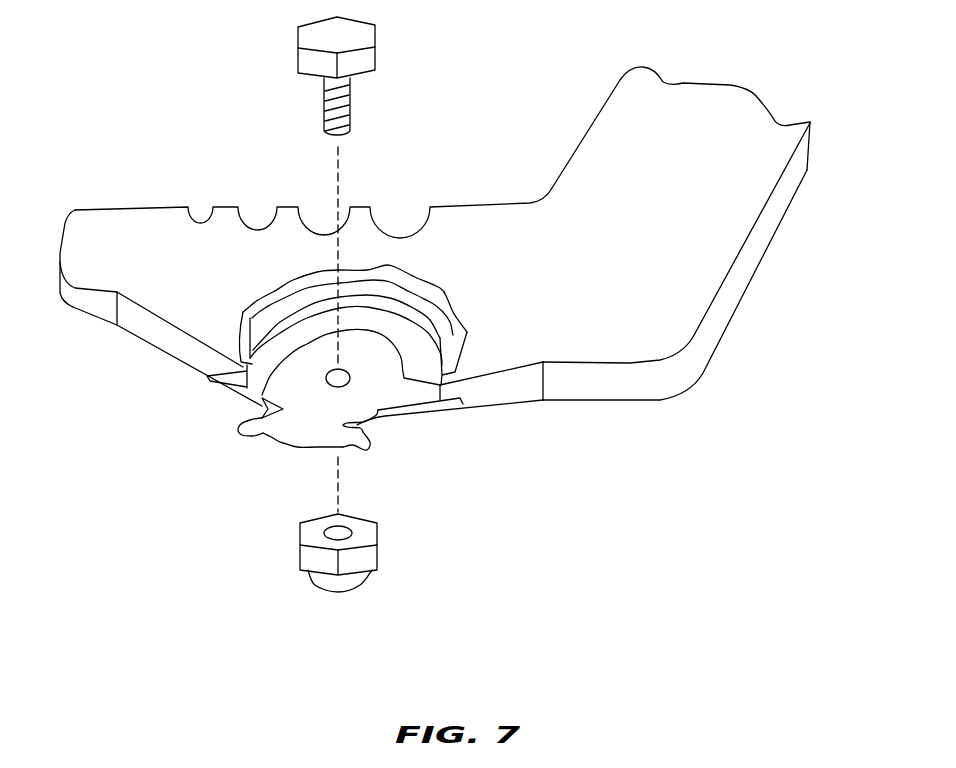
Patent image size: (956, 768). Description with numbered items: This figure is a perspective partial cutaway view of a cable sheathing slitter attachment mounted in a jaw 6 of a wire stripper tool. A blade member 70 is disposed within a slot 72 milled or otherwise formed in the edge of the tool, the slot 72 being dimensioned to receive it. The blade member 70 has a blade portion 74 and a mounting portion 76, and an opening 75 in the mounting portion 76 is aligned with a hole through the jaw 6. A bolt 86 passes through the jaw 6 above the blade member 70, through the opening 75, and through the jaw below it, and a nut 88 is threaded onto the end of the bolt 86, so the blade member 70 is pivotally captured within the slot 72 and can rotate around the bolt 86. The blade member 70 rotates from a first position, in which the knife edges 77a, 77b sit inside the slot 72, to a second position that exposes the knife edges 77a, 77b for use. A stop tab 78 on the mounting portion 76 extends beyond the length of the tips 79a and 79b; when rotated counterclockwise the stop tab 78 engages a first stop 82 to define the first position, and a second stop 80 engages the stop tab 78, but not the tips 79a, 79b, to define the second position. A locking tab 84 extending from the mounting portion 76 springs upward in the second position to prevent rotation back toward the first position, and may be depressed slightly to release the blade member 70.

The jaw 6 is at (708, 227).
The blade member 70 is at (333, 420).
The slot 72 is at (455, 407).
The blade portion 74 is at (295, 438).
The opening 75 is at (344, 370).
The mounting portion 76 is at (387, 345).
The knife edge 77a is at (258, 410).
The knife edge 77b is at (363, 427).
The stop tab 78 is at (407, 400).
The tip 79a is at (245, 430).
The tip 79b is at (357, 450).
The second stop 80 is at (463, 333).
The first stop 82 is at (243, 313).
The locking tab 84 is at (283, 395).
The bolt 86 is at (377, 58).
The nut 88 is at (310, 575).